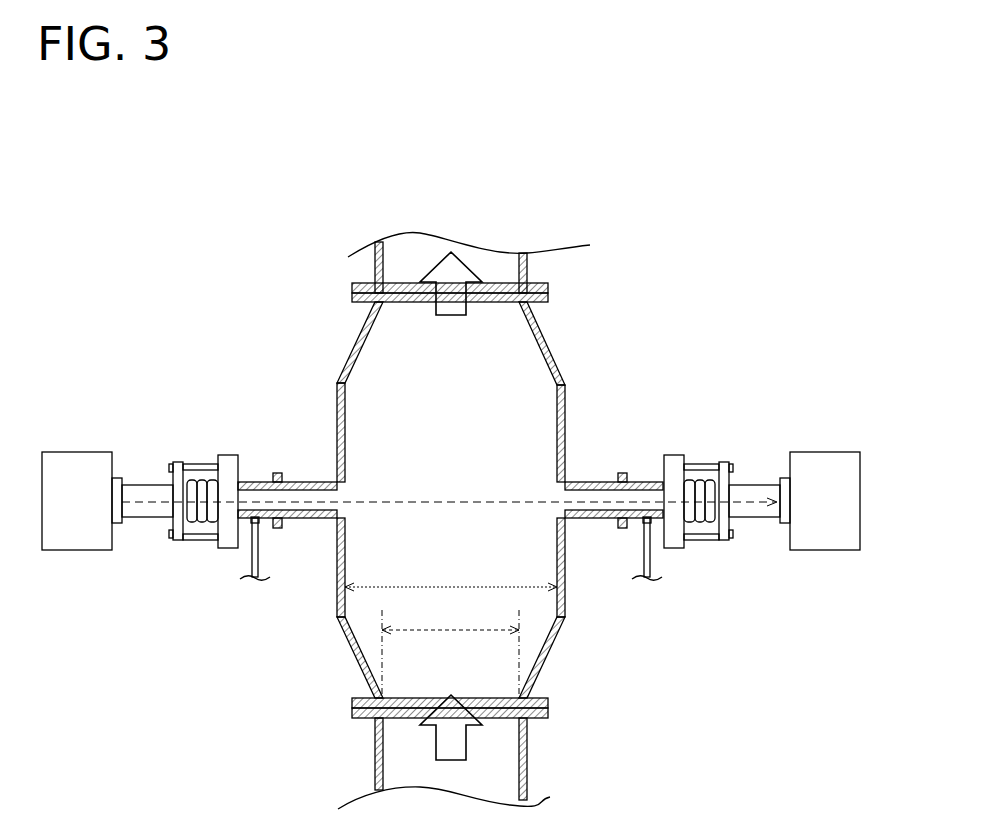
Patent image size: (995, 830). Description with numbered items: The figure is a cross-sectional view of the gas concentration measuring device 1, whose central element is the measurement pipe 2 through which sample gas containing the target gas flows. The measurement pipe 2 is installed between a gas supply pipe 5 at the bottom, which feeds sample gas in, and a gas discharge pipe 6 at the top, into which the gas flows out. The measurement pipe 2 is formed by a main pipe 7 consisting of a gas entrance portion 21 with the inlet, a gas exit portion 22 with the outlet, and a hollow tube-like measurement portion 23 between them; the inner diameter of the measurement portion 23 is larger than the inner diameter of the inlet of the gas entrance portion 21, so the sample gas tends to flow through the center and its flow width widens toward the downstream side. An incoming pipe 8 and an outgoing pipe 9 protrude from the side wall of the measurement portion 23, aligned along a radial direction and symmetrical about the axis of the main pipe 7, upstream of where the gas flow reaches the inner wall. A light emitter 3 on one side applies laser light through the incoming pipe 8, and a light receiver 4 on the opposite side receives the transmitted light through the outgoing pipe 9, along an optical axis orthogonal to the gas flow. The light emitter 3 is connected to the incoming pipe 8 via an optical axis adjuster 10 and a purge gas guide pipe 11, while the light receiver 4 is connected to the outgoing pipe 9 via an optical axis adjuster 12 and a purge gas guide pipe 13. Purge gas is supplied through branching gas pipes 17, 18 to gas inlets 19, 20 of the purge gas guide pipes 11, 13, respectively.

The gas concentration measuring device 1 is at (652, 372).
The measurement pipe 2 is at (328, 358).
The light emitter 3 is at (88, 545).
The light receiver 4 is at (823, 542).
The gas supply pipe 5 is at (375, 765).
The gas discharge pipe 6 is at (530, 270).
The main pipe 7 is at (545, 380).
The incoming pipe 8 is at (320, 482).
The outgoing pipe 9 is at (593, 482).
The optical axis adjuster 10 is at (202, 484).
The purge gas guide pipe 11 is at (257, 482).
The optical axis adjuster 12 is at (703, 482).
The purge gas guide pipe 13 is at (640, 482).
The gas pipe 17 is at (252, 560).
The gas pipe 18 is at (650, 557).
The gas inlet 19 is at (255, 522).
The gas inlet 20 is at (645, 522).
The gas entrance portion 21 is at (540, 675).
The gas exit portion 22 is at (540, 338).
The measurement portion 23 is at (565, 600).